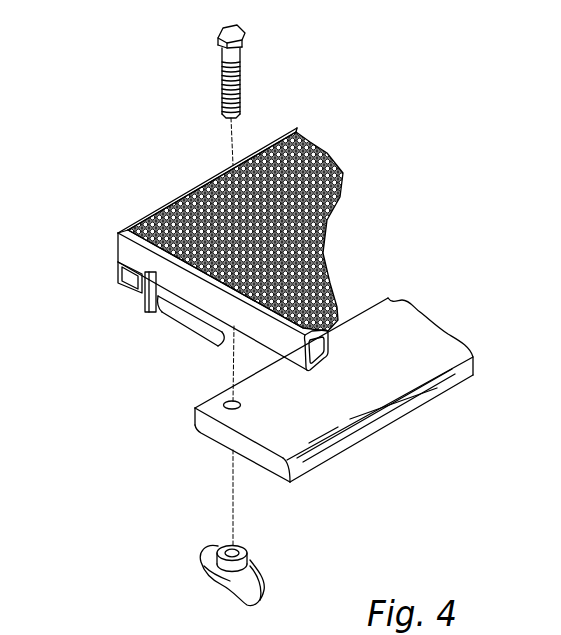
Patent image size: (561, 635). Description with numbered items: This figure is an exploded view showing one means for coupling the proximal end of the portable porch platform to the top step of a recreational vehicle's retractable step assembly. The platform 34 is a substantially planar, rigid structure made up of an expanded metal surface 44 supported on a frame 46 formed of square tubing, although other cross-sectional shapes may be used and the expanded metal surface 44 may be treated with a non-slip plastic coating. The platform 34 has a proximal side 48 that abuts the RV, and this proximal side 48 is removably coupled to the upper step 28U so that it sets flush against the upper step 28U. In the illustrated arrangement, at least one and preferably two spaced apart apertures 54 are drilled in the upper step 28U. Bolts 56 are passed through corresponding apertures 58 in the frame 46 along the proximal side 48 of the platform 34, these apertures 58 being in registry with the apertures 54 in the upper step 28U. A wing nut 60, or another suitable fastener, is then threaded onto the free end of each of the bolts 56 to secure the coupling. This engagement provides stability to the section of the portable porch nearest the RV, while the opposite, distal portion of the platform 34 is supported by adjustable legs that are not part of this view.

The platform 34 is at (163, 200).
The expanded metal surface 44 is at (318, 165).
The frame 46 is at (127, 252).
The proximal side 48 is at (125, 292).
The apertures 54 is at (224, 395).
The bolts 56 is at (242, 65).
The apertures 58 is at (235, 166).
The wing nut 60 is at (262, 575).
The upper step 28U is at (412, 325).